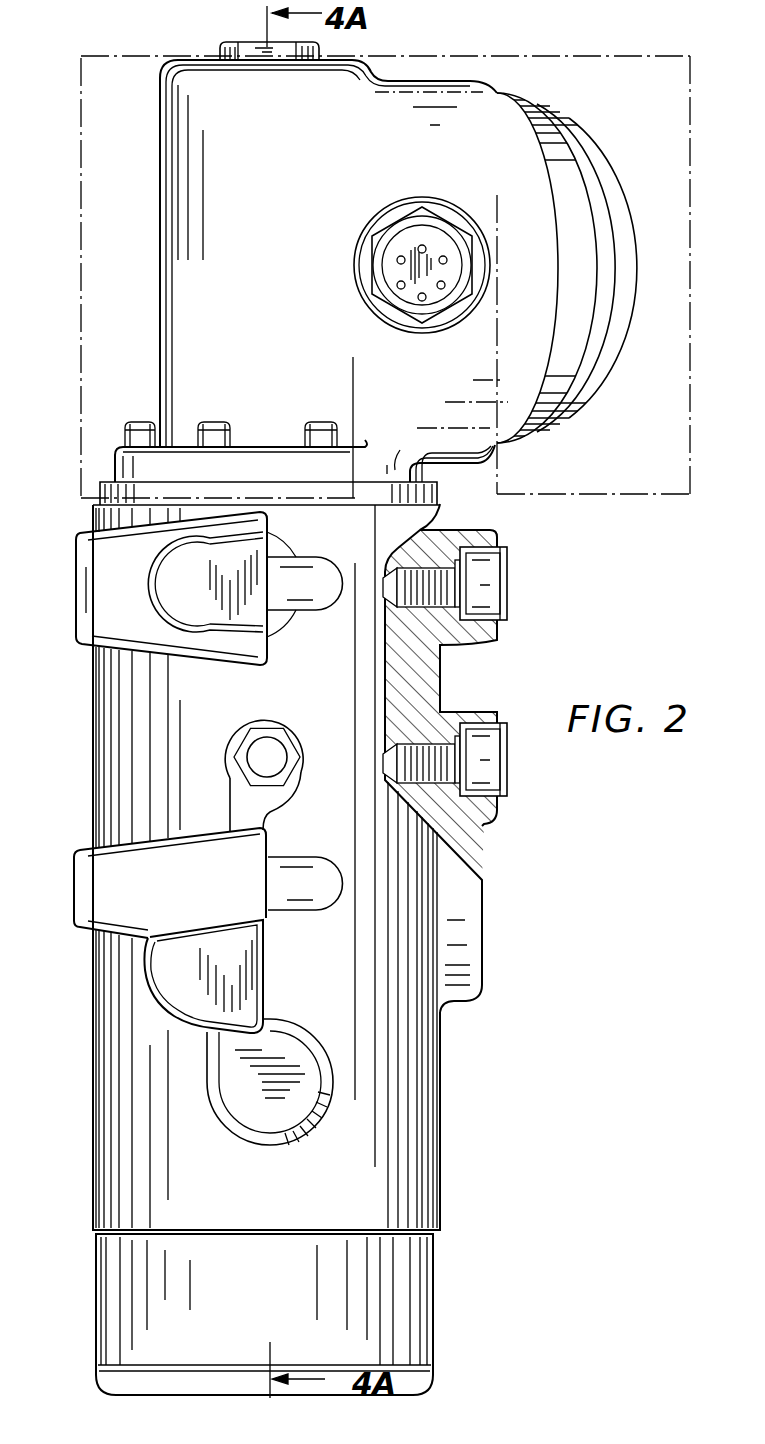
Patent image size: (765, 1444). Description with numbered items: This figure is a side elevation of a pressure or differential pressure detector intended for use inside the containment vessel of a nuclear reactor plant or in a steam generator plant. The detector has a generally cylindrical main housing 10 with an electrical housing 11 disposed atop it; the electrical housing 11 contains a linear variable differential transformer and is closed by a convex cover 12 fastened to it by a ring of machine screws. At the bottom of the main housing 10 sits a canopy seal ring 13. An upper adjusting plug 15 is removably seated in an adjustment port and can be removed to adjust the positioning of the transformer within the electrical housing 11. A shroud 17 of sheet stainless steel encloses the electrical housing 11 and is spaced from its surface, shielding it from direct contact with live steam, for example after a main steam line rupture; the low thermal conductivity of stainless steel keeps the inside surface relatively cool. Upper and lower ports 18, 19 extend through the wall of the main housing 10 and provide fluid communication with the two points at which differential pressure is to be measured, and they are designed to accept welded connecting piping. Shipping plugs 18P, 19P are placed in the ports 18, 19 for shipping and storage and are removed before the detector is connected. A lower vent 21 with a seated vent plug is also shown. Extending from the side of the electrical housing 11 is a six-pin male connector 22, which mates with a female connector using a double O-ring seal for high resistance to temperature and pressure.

The main housing 10 is at (483, 983).
The electrical housing 11 is at (478, 120).
The convex cover 12 is at (637, 254).
The canopy seal ring 13 is at (433, 1373).
The upper adjusting plug 15 is at (221, 46).
The shroud 17 is at (81, 103).
The upper port 18 is at (490, 637).
The shipping plug 18P is at (497, 573).
The lower port 19 is at (487, 815).
The shipping plug 19P is at (497, 776).
The lower vent 21 is at (230, 748).
The six-pin male connector 22 is at (401, 259).